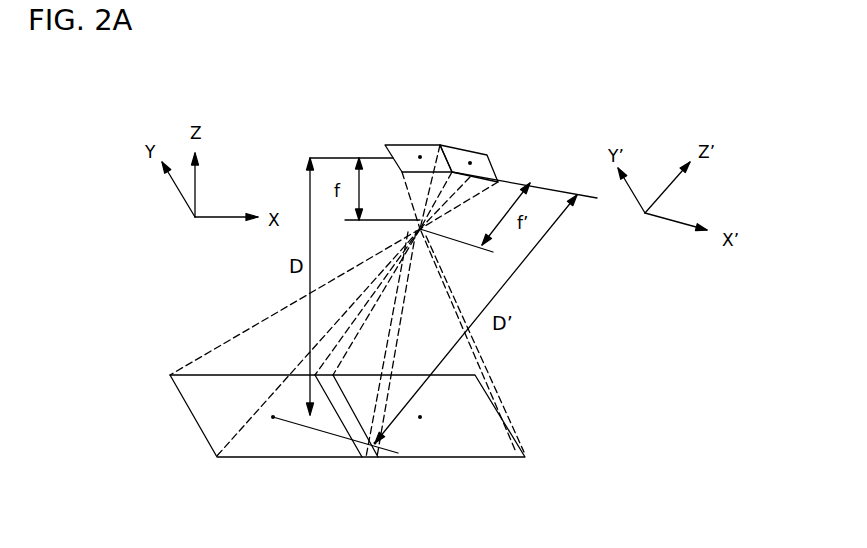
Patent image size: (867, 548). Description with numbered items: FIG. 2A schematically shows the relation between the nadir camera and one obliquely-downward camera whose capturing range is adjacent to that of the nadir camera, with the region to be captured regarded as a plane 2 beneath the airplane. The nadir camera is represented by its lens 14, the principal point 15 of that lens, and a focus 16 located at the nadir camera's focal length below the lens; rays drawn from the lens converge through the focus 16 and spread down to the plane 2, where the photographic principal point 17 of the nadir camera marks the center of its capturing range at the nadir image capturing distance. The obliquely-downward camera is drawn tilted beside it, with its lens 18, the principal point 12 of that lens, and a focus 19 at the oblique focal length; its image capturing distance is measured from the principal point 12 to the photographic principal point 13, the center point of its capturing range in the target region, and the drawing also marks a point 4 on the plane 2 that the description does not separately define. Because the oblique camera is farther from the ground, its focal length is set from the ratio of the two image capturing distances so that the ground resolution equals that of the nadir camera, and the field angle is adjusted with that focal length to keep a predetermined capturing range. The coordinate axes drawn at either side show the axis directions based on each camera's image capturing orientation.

The object surface 2 is at (293, 452).
The measurement point on object surface 4 is at (363, 452).
The principal point 12 is at (471, 162).
The photographic principal point 13 is at (273, 420).
The lens 14 is at (397, 156).
The principal point 15 is at (420, 157).
The focus 16 is at (412, 231).
The photographic principal point 17 is at (420, 420).
The lens 18 is at (463, 152).
The focus 19 is at (436, 243).